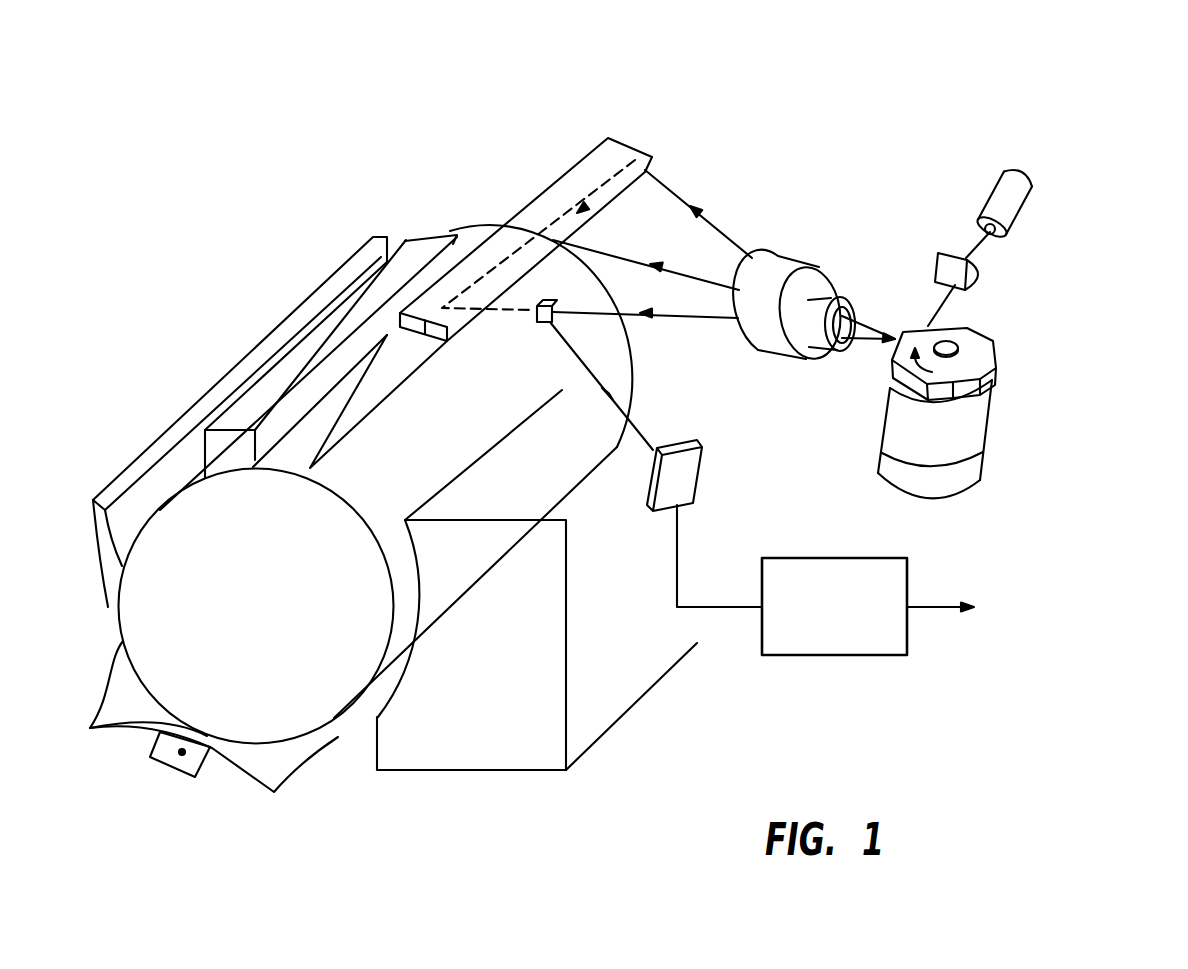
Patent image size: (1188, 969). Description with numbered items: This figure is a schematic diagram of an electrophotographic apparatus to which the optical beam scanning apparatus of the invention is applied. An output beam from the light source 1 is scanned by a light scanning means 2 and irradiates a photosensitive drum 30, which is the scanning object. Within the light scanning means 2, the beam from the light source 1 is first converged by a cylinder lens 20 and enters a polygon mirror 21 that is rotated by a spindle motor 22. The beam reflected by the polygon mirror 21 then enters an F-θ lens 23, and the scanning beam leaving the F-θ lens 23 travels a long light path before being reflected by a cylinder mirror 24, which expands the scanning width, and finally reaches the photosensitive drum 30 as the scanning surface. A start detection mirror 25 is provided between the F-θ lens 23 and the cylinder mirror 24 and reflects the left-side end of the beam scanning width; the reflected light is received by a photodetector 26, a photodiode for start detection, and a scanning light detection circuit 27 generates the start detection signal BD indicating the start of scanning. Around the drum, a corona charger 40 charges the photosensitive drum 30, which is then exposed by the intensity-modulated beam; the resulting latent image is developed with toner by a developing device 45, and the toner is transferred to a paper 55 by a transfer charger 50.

The light source 1 is at (998, 190).
The light scanning means 2 is at (1092, 291).
The cylinder lens 20 is at (983, 272).
The polygon mirror 21 is at (997, 349).
The spindle motor 22 is at (885, 443).
The F-θ lens 23 is at (793, 266).
The cylinder mirror 24 is at (610, 138).
The start detection mirror 25 is at (540, 323).
The photodetector 26 is at (695, 440).
The scanning light detection circuit 27 is at (864, 657).
The photosensitive drum 30 is at (375, 701).
The corona charger 40 is at (457, 235).
The developing device 45 is at (263, 338).
The transfer charger 50 is at (174, 778).
The paper 55 is at (252, 774).